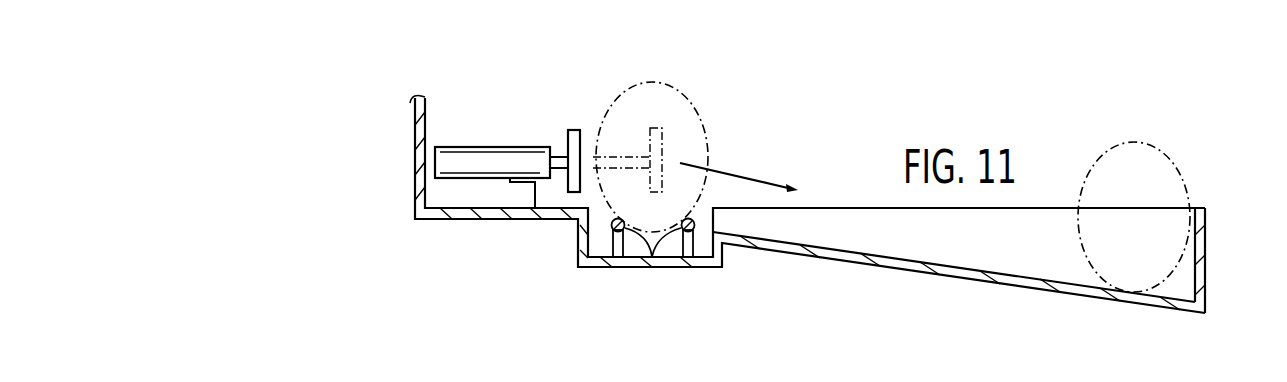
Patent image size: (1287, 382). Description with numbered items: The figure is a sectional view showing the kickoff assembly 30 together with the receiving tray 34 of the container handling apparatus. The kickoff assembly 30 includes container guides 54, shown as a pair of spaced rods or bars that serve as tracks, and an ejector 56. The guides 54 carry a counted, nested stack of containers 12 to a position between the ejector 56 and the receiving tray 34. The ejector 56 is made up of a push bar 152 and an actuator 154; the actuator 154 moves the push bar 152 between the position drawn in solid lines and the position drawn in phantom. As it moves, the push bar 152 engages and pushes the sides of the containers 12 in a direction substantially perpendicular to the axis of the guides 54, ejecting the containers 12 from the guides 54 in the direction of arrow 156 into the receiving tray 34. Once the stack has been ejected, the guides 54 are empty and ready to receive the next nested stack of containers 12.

The containers 12 is at (694, 100).
The kickoff assembly 30 is at (526, 80).
The receiving tray 34 is at (1207, 228).
The container guides 54 is at (652, 257).
The ejector 56 is at (518, 148).
The push bar 152 is at (580, 146).
The actuator 154 is at (463, 178).
The arrow 156 is at (735, 172).